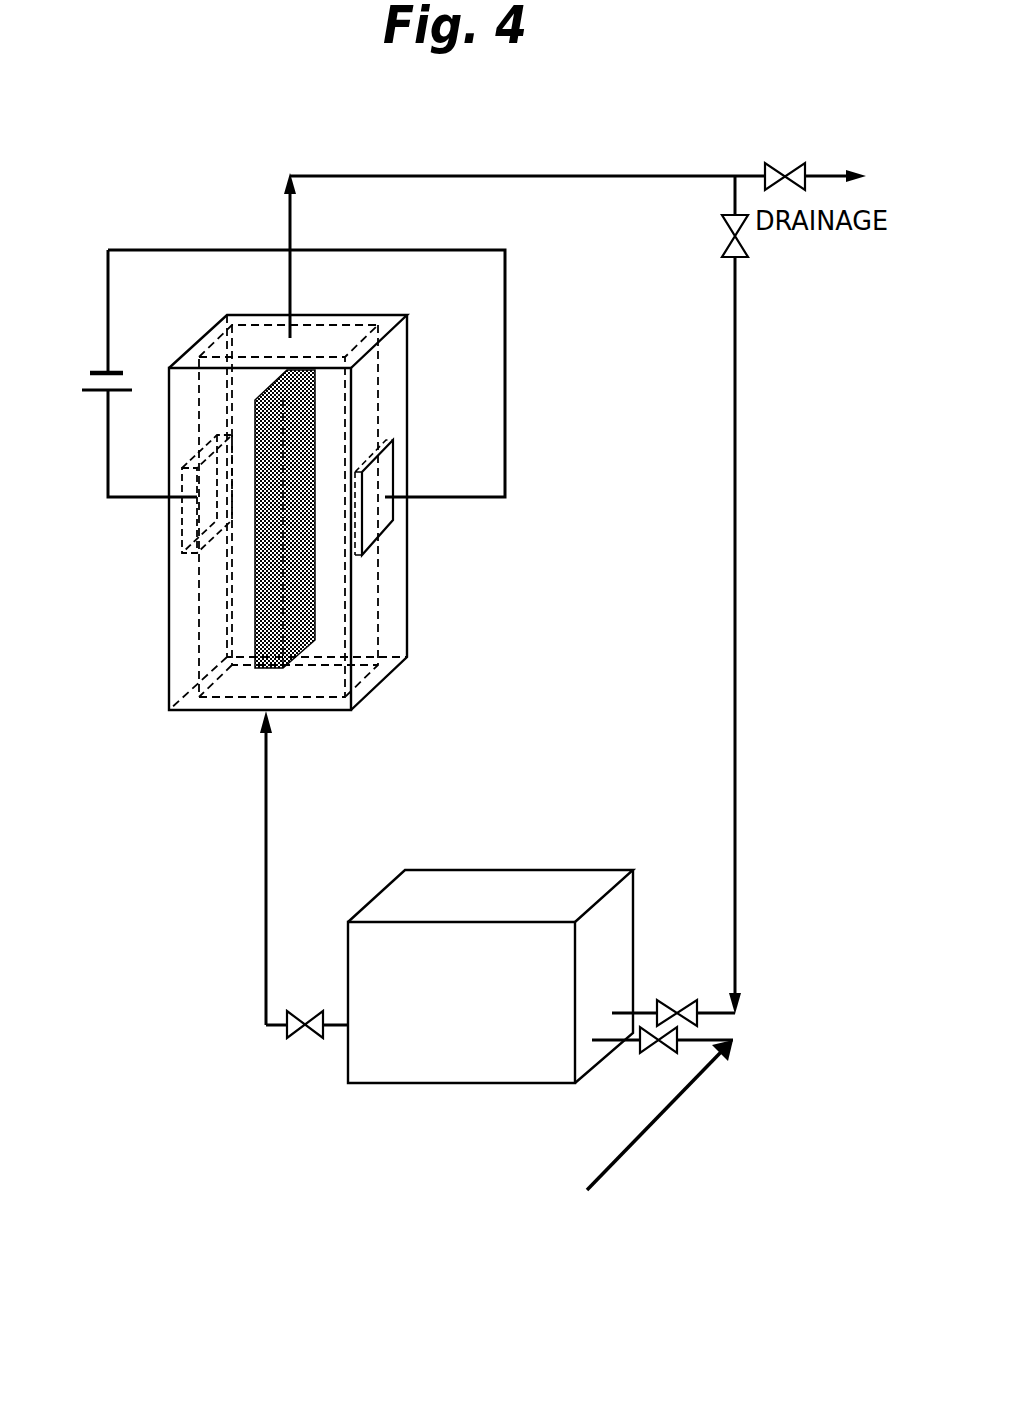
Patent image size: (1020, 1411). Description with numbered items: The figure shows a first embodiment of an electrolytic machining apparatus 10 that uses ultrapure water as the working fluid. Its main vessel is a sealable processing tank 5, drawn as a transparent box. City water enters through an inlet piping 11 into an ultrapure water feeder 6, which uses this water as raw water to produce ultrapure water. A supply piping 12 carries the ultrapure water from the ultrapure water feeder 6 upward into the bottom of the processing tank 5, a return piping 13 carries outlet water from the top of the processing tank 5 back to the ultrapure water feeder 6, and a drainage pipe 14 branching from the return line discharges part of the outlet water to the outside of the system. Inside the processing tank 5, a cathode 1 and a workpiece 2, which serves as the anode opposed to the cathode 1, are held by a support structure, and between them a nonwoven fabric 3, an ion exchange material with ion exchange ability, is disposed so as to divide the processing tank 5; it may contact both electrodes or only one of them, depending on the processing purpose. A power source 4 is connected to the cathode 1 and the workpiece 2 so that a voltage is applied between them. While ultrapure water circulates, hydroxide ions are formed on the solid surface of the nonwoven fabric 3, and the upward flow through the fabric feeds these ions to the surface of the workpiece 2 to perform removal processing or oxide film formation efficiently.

The cathode 1 is at (380, 511).
The workpiece 2 is at (203, 526).
The nonwoven fabric 3 is at (270, 632).
The power source 4 is at (83, 389).
The processing tank 5 is at (403, 621).
The ultrapure water feeder 6 is at (490, 976).
The electrolytic machining apparatus 10 is at (427, 1112).
The inlet piping 11 is at (673, 1105).
The supply piping 12 is at (262, 846).
The return piping 13 is at (736, 557).
The drainage pipe 14 is at (812, 166).